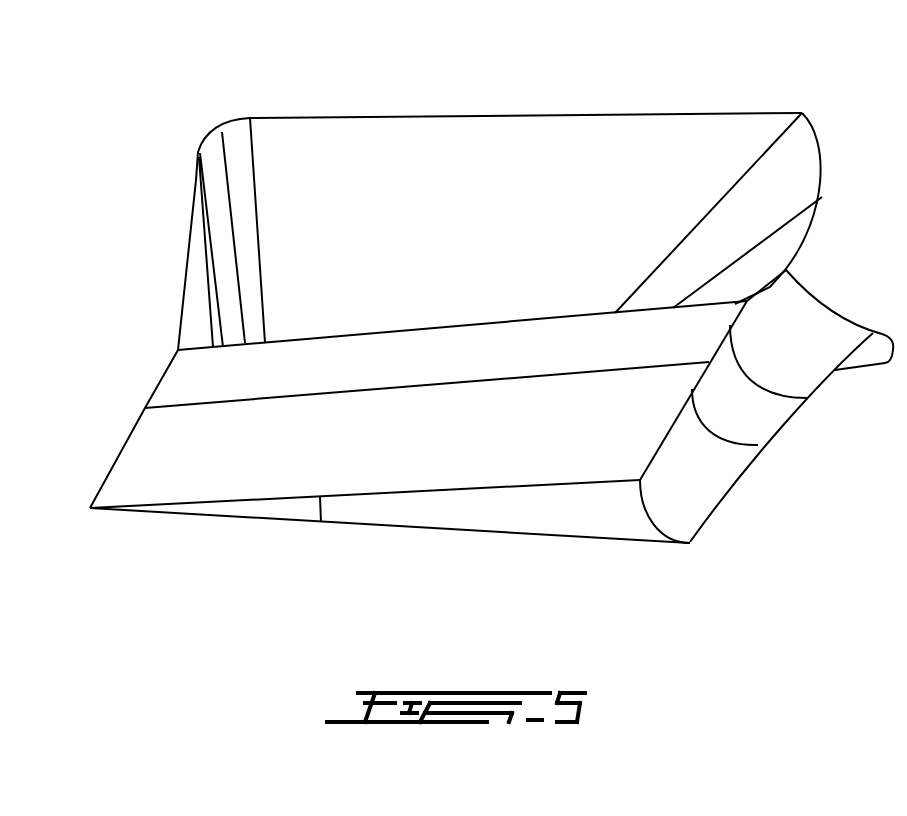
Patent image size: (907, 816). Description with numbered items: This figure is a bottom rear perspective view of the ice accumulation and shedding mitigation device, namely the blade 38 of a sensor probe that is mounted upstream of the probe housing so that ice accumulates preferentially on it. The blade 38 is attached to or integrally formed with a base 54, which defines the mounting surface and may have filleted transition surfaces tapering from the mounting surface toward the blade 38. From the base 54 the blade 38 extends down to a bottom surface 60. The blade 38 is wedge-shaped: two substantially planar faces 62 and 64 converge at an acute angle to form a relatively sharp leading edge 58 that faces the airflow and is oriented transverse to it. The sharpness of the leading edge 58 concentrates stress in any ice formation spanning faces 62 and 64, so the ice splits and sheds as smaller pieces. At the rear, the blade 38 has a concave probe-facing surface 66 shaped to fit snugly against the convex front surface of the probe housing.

The blade 38 is at (140, 367).
The base 54 is at (593, 167).
The leading edge 58 is at (128, 433).
The bottom surface 60 is at (513, 505).
The face 62 is at (375, 462).
The face 64 is at (427, 530).
The rear probe-facing surface 66 is at (747, 422).